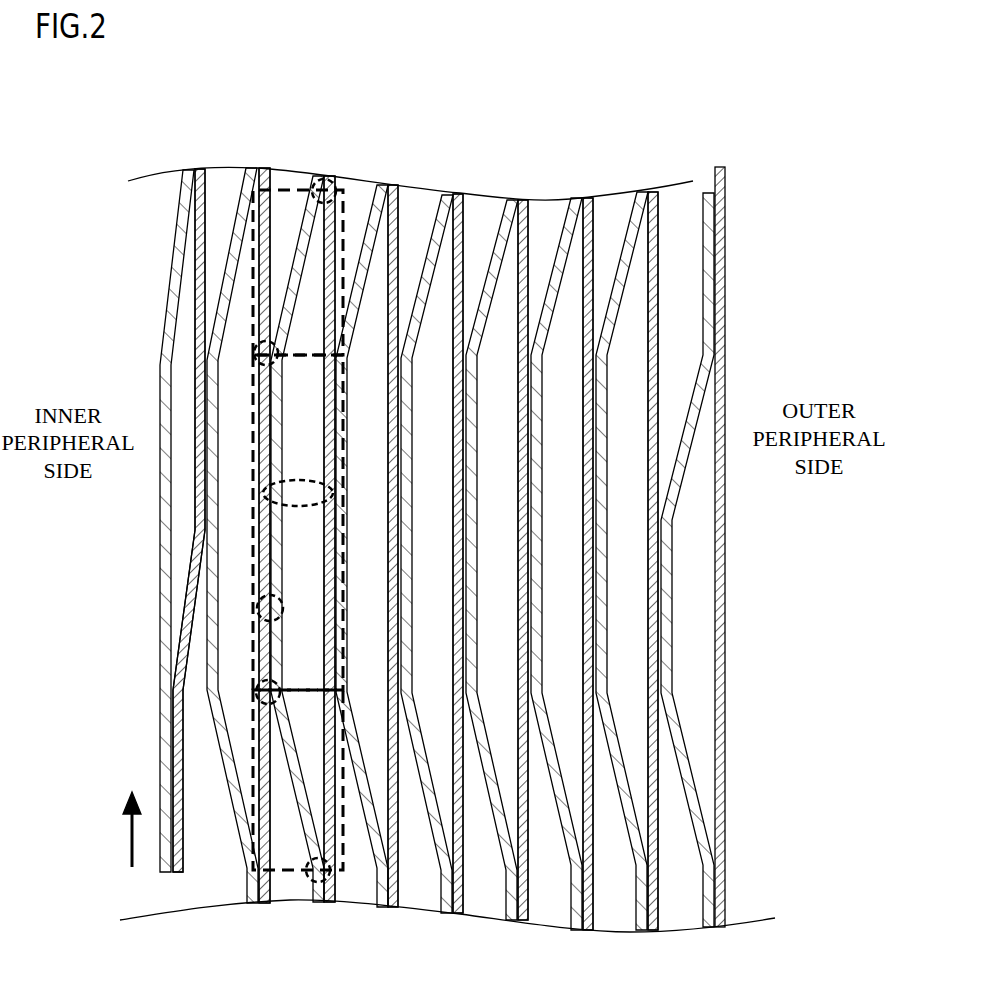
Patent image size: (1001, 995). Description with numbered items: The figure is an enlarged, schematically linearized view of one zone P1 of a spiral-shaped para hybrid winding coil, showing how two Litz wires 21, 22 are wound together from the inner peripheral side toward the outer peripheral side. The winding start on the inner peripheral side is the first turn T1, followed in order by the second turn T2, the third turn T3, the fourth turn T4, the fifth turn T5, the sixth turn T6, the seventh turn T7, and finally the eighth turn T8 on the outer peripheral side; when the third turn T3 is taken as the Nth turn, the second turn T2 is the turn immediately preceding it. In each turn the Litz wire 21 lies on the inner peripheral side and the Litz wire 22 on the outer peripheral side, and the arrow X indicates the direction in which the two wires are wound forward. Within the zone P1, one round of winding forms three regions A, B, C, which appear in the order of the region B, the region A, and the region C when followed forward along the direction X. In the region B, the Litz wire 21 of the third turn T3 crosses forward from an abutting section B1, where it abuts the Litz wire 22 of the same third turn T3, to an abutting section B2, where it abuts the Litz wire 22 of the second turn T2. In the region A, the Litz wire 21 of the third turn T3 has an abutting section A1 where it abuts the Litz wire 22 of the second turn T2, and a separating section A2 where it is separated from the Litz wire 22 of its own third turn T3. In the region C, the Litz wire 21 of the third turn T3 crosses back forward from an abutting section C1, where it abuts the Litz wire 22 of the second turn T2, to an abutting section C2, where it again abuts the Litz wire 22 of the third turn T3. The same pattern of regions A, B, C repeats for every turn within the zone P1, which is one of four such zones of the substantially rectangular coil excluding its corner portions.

The Litz wire 21 is at (187, 169).
The Litz wire 22 is at (200, 169).
The zone P1 is at (147, 136).
The first turn T1 is at (181, 538).
The second turn T2 is at (258, 561).
The third turn T3 is at (325, 565).
The fourth turn T4 is at (393, 561).
The fifth turn T5 is at (455, 568).
The sixth turn T6 is at (518, 576).
The seventh turn T7 is at (583, 578).
The eighth turn T8 is at (646, 574).
The first region A is at (253, 528).
The second region B is at (253, 763).
The third region C is at (255, 272).
The abutting section A1 is at (283, 604).
The separating section A2 is at (298, 480).
The abutting section B1 is at (312, 862).
The abutting section B2 is at (262, 690).
The abutting section C1 is at (278, 326).
The abutting section C2 is at (316, 200).
The winding direction X is at (130, 838).